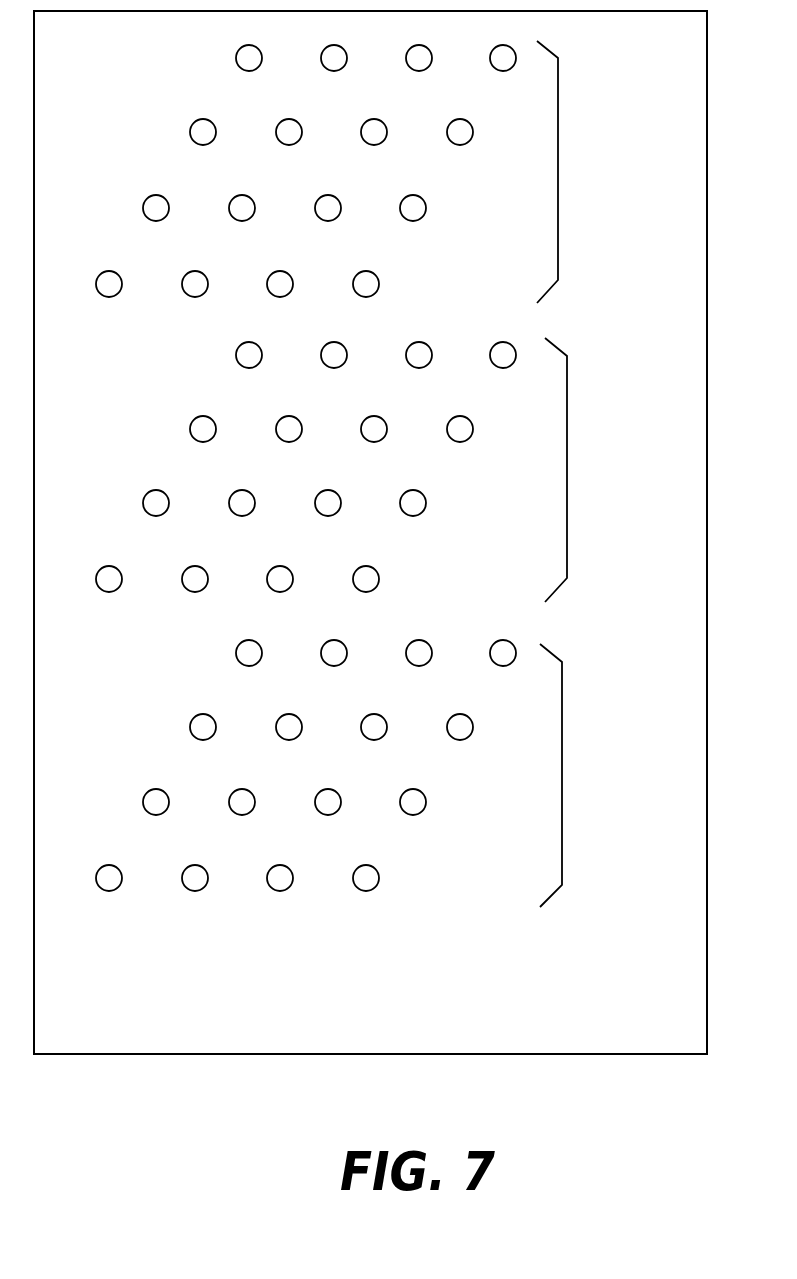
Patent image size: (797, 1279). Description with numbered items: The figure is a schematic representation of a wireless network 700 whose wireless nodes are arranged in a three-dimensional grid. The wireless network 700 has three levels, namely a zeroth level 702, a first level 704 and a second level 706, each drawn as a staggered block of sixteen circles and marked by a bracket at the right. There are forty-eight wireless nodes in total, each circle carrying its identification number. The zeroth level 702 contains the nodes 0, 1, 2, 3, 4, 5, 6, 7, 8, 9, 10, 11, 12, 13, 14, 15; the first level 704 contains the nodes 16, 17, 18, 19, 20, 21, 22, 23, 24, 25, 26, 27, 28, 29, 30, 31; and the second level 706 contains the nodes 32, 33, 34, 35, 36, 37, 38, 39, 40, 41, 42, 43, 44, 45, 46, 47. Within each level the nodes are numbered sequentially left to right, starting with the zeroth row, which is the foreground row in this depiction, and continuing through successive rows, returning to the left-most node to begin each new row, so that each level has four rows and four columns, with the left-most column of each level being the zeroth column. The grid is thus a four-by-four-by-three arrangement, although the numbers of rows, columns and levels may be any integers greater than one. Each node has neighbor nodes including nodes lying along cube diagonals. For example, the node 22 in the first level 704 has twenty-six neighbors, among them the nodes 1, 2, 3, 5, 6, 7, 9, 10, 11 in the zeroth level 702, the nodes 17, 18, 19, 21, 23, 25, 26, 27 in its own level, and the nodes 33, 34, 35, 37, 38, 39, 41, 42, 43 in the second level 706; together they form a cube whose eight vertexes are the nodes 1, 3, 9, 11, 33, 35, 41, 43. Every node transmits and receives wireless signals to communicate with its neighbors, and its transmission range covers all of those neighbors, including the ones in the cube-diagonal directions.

The wireless network 700 is at (355, 1025).
The zeroth level 702 is at (562, 763).
The first level 704 is at (567, 450).
The second level 706 is at (558, 168).
The wireless node 0 is at (109, 898).
The wireless node 1 is at (195, 898).
The wireless node 2 is at (280, 898).
The wireless node 3 is at (366, 898).
The wireless node 4 is at (156, 822).
The wireless node 5 is at (249, 822).
The wireless node 6 is at (331, 822).
The wireless node 7 is at (414, 822).
The wireless node 8 is at (203, 747).
The wireless node 9 is at (291, 747).
The wireless node 10 is at (383, 747).
The wireless node 11 is at (468, 747).
The wireless node 12 is at (258, 673).
The wireless node 13 is at (340, 673).
The wireless node 14 is at (424, 673).
The wireless node 15 is at (508, 673).
The wireless node 16 is at (111, 599).
The wireless node 17 is at (195, 599).
The wireless node 18 is at (282, 599).
The wireless node 19 is at (366, 599).
The wireless node 20 is at (151, 523).
The wireless node 21 is at (240, 523).
The wireless node 22 is at (325, 523).
The wireless node 23 is at (408, 523).
The wireless node 24 is at (199, 449).
The wireless node 25 is at (287, 449).
The wireless node 26 is at (373, 449).
The wireless node 27 is at (457, 449).
The wireless node 28 is at (249, 375).
The wireless node 29 is at (332, 375).
The wireless node 30 is at (420, 375).
The wireless node 31 is at (505, 375).
The wireless node 32 is at (106, 304).
The wireless node 33 is at (190, 304).
The wireless node 34 is at (276, 304).
The wireless node 35 is at (363, 304).
The wireless node 36 is at (159, 228).
The wireless node 37 is at (240, 228).
The wireless node 38 is at (325, 228).
The wireless node 39 is at (409, 228).
The wireless node 40 is at (200, 152).
The wireless node 41 is at (290, 152).
The wireless node 42 is at (375, 152).
The wireless node 43 is at (468, 152).
The wireless node 44 is at (248, 78).
The wireless node 45 is at (338, 78).
The wireless node 46 is at (423, 78).
The wireless node 47 is at (506, 78).